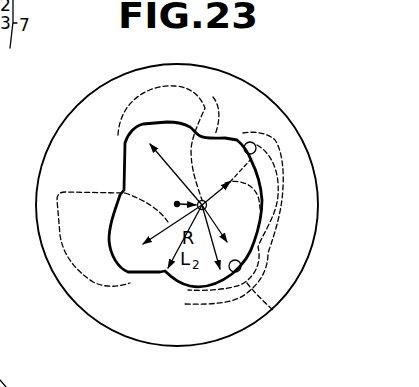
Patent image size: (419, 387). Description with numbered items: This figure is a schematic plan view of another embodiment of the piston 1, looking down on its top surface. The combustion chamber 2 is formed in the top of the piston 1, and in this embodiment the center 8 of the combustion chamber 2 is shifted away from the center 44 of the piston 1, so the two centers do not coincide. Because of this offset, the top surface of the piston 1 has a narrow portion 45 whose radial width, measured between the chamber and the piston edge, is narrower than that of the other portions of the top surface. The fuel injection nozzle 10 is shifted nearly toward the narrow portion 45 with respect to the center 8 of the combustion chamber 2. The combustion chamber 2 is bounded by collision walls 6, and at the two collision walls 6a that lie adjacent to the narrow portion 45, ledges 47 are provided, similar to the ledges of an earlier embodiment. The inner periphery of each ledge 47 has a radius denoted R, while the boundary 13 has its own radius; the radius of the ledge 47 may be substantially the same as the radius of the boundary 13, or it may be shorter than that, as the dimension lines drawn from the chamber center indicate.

The piston 1 is at (260, 86).
The combustion chamber 2 is at (134, 197).
The collision wall 6 is at (137, 133).
The collision wall 6a is at (237, 138).
The center of the combustion chamber 8 is at (176, 203).
The fuel injection nozzle 10 is at (208, 208).
The boundary 13 is at (160, 274).
The center of the piston 44 is at (176, 205).
The narrow portion 45 is at (293, 212).
The ledge 47 is at (256, 143).